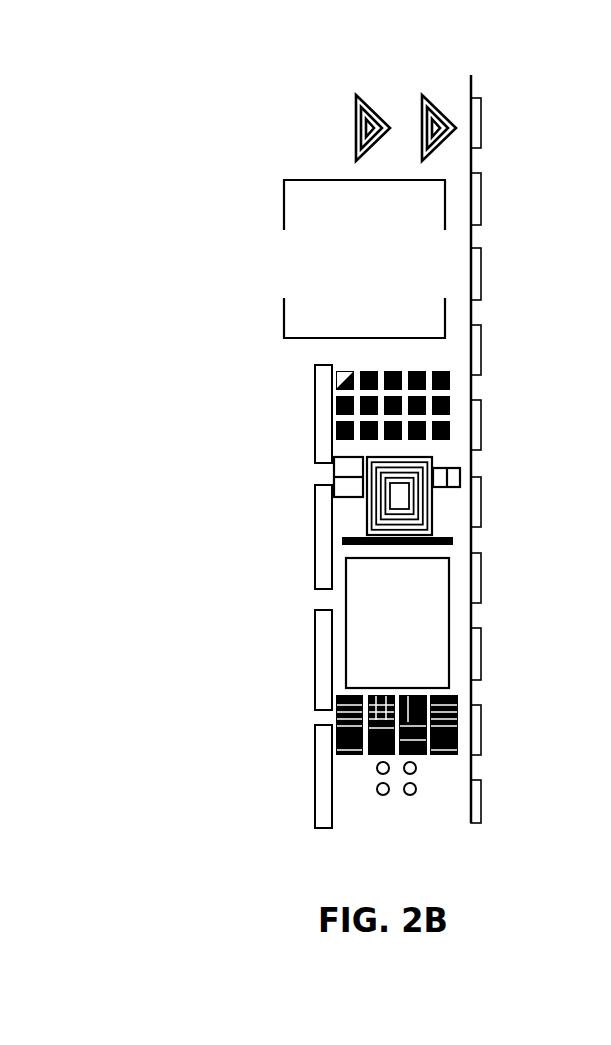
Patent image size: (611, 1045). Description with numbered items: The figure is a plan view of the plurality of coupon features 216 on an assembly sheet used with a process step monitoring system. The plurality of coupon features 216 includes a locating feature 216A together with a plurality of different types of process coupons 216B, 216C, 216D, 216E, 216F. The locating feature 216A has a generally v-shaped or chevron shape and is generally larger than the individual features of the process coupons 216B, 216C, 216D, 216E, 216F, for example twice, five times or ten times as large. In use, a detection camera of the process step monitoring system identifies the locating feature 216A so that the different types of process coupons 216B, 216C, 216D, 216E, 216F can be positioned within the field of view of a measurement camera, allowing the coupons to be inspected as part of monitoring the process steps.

The plurality of coupon features 216 is at (526, 98).
The locating feature 216A is at (252, 135).
The process coupon 216B is at (282, 236).
The process coupon 216C is at (312, 399).
The process coupon 216D is at (312, 500).
The process coupon 216E is at (312, 628).
The process coupon 216F is at (308, 721).